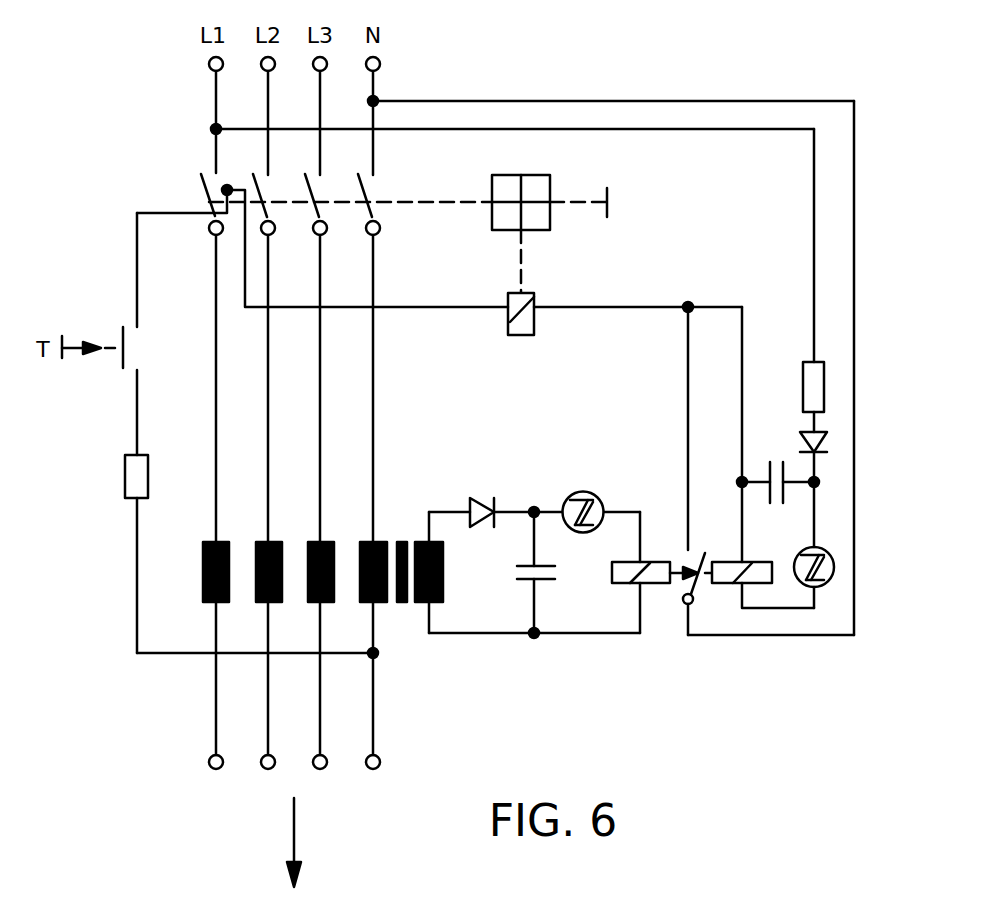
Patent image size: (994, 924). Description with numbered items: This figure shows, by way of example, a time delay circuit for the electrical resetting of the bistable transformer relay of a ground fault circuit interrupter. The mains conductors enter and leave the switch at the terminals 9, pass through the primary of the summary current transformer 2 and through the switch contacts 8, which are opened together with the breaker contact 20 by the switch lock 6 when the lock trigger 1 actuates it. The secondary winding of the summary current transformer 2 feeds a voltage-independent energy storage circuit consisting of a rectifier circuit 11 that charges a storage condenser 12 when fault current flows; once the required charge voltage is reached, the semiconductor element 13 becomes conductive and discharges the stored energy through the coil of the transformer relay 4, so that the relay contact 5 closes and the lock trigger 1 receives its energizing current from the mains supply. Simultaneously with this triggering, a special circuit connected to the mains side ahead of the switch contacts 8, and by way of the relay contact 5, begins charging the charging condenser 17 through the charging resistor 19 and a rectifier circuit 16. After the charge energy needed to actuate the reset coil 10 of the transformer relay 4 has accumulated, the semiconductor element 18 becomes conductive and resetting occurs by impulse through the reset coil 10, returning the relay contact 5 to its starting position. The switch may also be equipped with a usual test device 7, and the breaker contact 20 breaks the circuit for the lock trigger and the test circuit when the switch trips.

The lock trigger 1 is at (534, 301).
The summary current transformer 2 is at (203, 565).
The transformer relay 4 is at (657, 583).
The relay contact 5 is at (695, 603).
The switch lock 6 is at (532, 175).
The test device 7 is at (93, 354).
The switch contacts 8 is at (207, 188).
The terminals 9 is at (381, 63).
The reset coil 10 is at (763, 583).
The rectifier circuit 11 is at (482, 527).
The storage condenser 12 is at (543, 583).
The semiconductor element 13 is at (587, 533).
The rectifier circuit 16 is at (824, 441).
The charging condenser 17 is at (784, 492).
The semiconductor element 18 is at (830, 584).
The charging resistor 19 is at (823, 393).
The breaker contact 20 is at (227, 185).